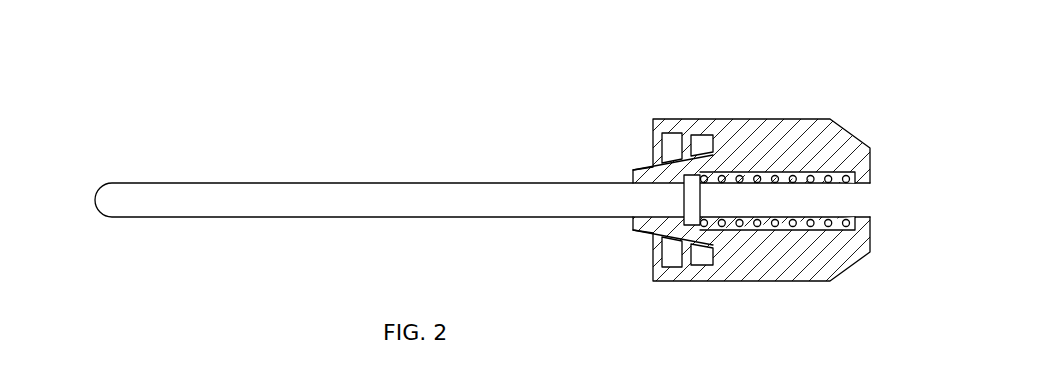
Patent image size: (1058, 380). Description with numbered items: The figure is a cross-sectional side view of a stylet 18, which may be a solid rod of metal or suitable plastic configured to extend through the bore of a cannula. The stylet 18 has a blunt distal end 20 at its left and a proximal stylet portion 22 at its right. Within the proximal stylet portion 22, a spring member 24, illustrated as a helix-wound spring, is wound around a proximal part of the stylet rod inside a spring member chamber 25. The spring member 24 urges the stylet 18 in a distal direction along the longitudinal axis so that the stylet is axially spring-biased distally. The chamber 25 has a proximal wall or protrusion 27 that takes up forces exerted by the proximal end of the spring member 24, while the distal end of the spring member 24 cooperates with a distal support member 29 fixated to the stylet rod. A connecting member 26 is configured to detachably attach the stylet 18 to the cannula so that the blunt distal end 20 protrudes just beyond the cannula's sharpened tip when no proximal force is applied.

The stylet 18 is at (623, 67).
The blunt distal end 20 is at (108, 198).
The proximal stylet portion 22 is at (793, 130).
The spring member 24 is at (812, 178).
The spring member chamber 25 is at (803, 223).
The connecting member 26 is at (704, 145).
The proximal wall or protrusion 27 is at (850, 225).
The distal support member 29 is at (693, 184).